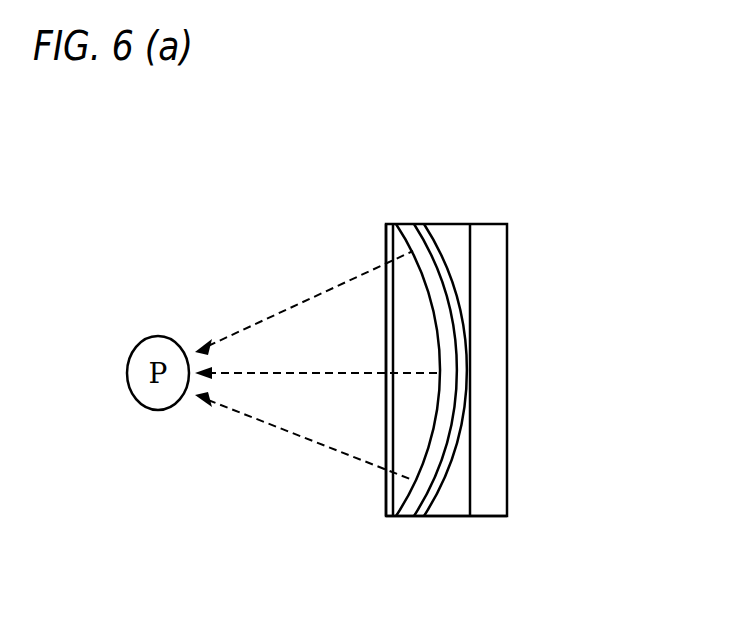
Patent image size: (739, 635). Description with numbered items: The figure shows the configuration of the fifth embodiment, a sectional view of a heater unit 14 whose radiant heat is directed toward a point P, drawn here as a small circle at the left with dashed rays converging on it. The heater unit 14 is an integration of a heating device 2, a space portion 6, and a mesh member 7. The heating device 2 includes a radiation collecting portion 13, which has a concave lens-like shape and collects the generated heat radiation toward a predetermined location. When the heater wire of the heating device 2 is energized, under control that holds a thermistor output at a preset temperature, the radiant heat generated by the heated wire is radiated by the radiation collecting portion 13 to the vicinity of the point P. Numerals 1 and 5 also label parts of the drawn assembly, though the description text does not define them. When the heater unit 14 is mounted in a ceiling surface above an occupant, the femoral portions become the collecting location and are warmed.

The lens base body 1 is at (487, 252).
The heating device 2 is at (425, 252).
The light incident plate 5 is at (386, 226).
The space portion 6 is at (410, 440).
The mesh member 7 is at (383, 312).
The radiation collecting portion 13 is at (450, 465).
The heater unit 14 is at (448, 516).